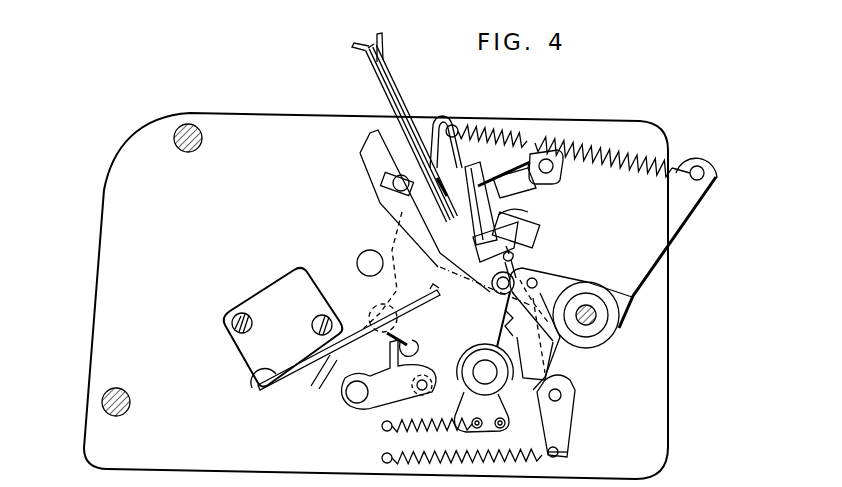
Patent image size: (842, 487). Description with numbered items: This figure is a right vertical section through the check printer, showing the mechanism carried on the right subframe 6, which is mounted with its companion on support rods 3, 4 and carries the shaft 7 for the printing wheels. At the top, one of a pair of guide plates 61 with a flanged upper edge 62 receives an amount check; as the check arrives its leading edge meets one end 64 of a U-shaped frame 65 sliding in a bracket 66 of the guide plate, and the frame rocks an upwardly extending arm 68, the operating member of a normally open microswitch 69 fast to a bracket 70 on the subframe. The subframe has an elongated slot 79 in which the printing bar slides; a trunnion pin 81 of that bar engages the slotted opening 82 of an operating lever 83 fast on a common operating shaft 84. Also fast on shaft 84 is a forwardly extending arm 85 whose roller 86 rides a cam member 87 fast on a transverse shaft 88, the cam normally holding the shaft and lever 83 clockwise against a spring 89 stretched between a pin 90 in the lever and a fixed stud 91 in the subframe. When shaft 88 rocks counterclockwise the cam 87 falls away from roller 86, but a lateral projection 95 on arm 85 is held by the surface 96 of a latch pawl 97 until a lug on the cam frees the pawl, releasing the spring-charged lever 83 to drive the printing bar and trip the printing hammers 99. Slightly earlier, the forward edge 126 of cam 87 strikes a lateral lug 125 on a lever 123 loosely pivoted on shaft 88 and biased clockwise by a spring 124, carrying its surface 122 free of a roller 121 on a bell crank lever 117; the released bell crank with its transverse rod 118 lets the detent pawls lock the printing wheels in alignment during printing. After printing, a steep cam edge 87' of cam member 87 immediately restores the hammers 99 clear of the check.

The support rod 3 is at (103, 400).
The support rod 4 is at (190, 126).
The right subframe 6 is at (262, 125).
The shaft 7 is at (363, 256).
The guide plate 61 is at (376, 88).
The flanged upper edge 62 is at (376, 36).
The end of U-shaped frame 64 is at (442, 120).
The U-shaped frame 65 is at (527, 216).
The bracket 66 is at (386, 72).
The upwardly extending arm 68 is at (418, 291).
The microswitch 69 is at (314, 394).
The bracket 70 is at (256, 371).
The elongated slot 79 is at (504, 171).
The trunnion pin 81 is at (560, 172).
The slotted opening 82 is at (551, 142).
The operating lever 83 is at (696, 214).
The operating shaft 84 is at (597, 322).
The forwardly extending arm 85 is at (628, 302).
The roller 86 is at (538, 273).
The cam member 87 is at (562, 359).
The steep cam edge 87' is at (579, 416).
The transverse shaft 88 is at (503, 404).
The spring 89 is at (519, 130).
The pin 90 is at (705, 172).
The fixed stud 91 is at (453, 125).
The lateral projection 95 is at (515, 253).
The latch surface 96 is at (485, 282).
The latch pawl 97 is at (512, 330).
The printing hammer 99 is at (516, 192).
The bell crank lever 117 is at (378, 402).
The transverse rod 118 is at (430, 392).
The roller 121 is at (380, 302).
The surface 122 is at (398, 248).
The lever 123 is at (388, 374).
The spring 124 is at (500, 430).
The lateral lug 125 is at (418, 343).
The forward edge 126 is at (444, 264).